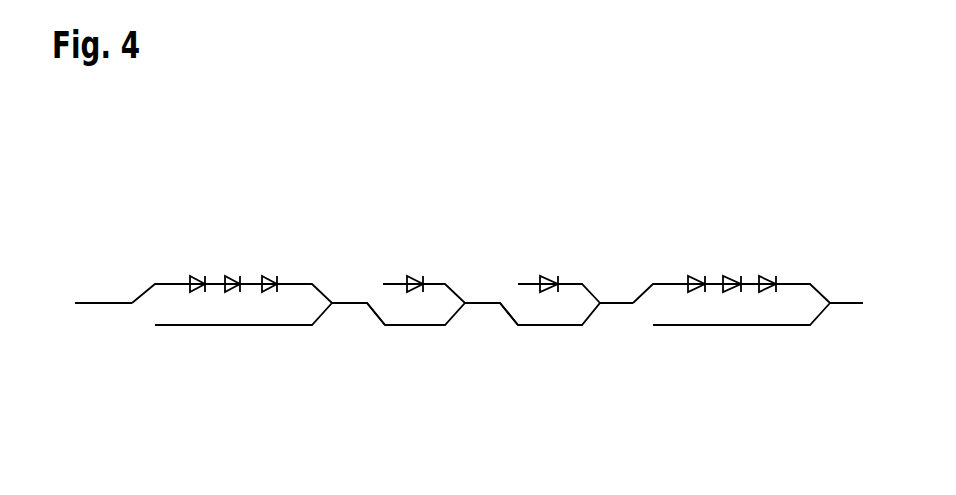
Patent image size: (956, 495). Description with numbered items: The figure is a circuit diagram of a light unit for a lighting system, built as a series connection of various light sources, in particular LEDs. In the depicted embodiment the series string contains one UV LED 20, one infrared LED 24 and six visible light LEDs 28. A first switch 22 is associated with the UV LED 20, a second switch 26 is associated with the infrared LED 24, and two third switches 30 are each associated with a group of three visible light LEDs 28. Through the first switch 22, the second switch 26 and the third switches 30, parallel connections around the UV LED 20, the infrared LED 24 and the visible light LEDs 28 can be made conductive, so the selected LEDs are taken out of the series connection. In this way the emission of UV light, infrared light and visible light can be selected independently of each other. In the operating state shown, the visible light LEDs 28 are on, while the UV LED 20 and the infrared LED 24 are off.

The UV LED 20 is at (421, 278).
The first switch 22 is at (375, 313).
The infrared LED 24 is at (556, 278).
The second switch 26 is at (508, 313).
The visible light LEDs 28 is at (205, 278).
The third switches 30 is at (142, 297).